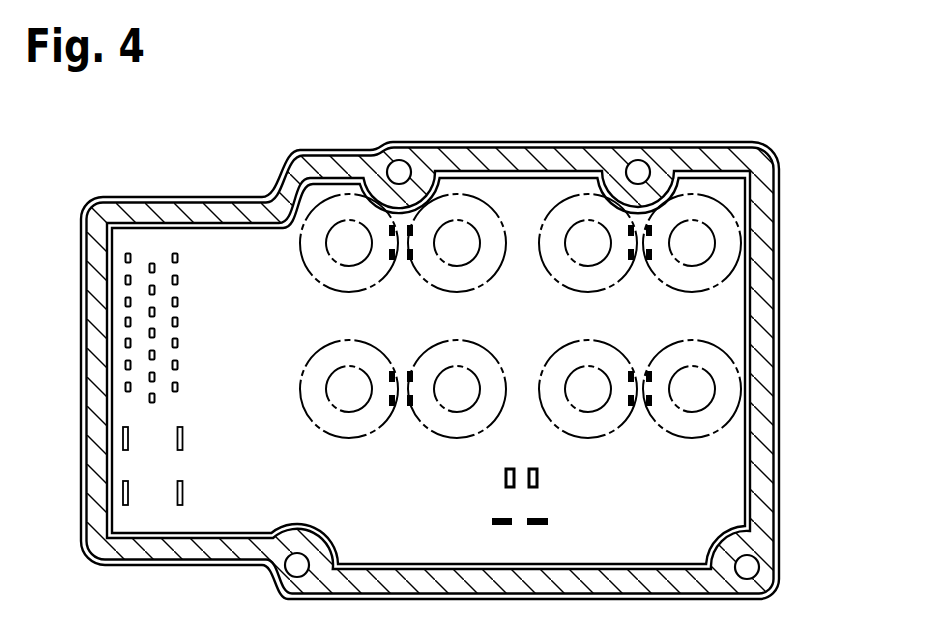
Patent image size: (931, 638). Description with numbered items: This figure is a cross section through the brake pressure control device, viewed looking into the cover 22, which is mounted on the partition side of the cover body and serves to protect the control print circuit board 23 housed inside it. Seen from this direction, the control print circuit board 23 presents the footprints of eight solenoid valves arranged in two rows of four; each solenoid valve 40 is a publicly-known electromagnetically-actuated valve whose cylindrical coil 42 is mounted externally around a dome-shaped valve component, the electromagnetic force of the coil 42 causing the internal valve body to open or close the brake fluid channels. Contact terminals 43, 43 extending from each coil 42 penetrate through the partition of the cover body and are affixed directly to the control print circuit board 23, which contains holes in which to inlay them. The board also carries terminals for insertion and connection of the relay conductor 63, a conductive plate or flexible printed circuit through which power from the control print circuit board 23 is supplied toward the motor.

The cover 22 is at (781, 190).
The control print circuit board 23 is at (722, 326).
The solenoid valve 40 is at (595, 437).
The coil 42 is at (596, 342).
The contact terminals 43 is at (392, 372).
The relay conductor 63 is at (541, 480).